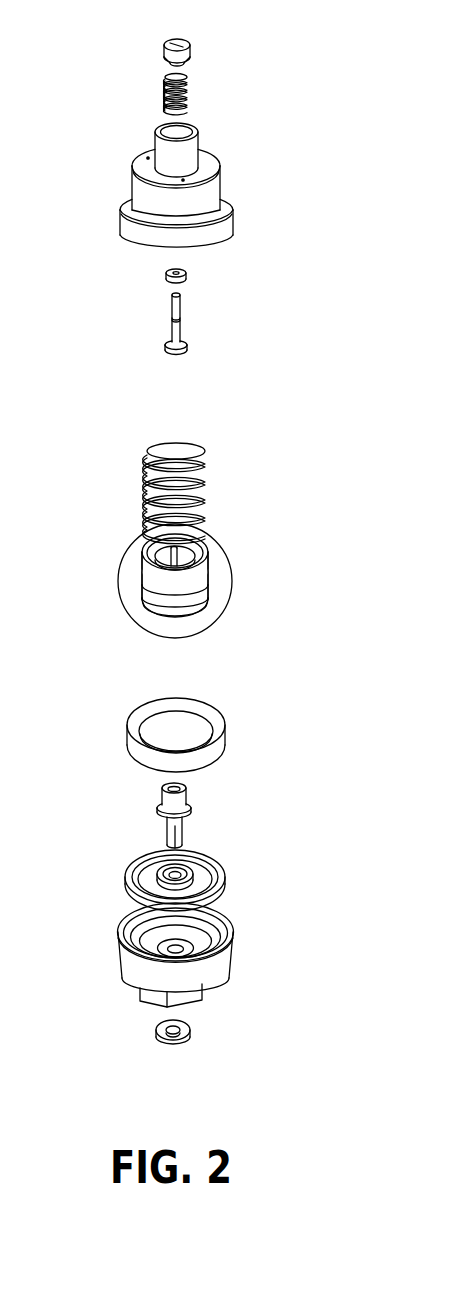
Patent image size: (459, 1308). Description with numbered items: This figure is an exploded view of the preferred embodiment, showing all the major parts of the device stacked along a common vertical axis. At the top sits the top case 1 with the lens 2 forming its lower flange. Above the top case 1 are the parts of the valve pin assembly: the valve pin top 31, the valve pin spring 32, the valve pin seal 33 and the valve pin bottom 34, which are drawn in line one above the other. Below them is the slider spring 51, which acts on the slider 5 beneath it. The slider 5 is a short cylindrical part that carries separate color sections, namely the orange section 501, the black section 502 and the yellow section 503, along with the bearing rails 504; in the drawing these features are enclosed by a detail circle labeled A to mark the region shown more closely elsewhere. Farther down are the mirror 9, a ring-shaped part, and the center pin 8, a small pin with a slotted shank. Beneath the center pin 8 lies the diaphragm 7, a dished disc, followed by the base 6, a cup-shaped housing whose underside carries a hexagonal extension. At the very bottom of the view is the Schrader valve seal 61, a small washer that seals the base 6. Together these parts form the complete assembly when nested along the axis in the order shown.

The top case 1 is at (226, 165).
The lens 2 is at (215, 234).
The valve pin top 31 is at (126, 39).
The valve pin spring 32 is at (119, 92).
The valve pin seal 33 is at (122, 293).
The valve pin bottom 34 is at (113, 338).
The slider 5 is at (132, 575).
The slider spring 51 is at (221, 483).
The orange section 501 is at (228, 562).
The black section 502 is at (228, 585).
The yellow section 503 is at (229, 618).
The bearing rails 504 is at (243, 534).
The detail region A is at (137, 582).
The mirror 9 is at (138, 735).
The center pin 8 is at (227, 815).
The diaphragm 7 is at (137, 887).
The base 6 is at (216, 956).
The Schrader valve seal 61 is at (225, 1048).